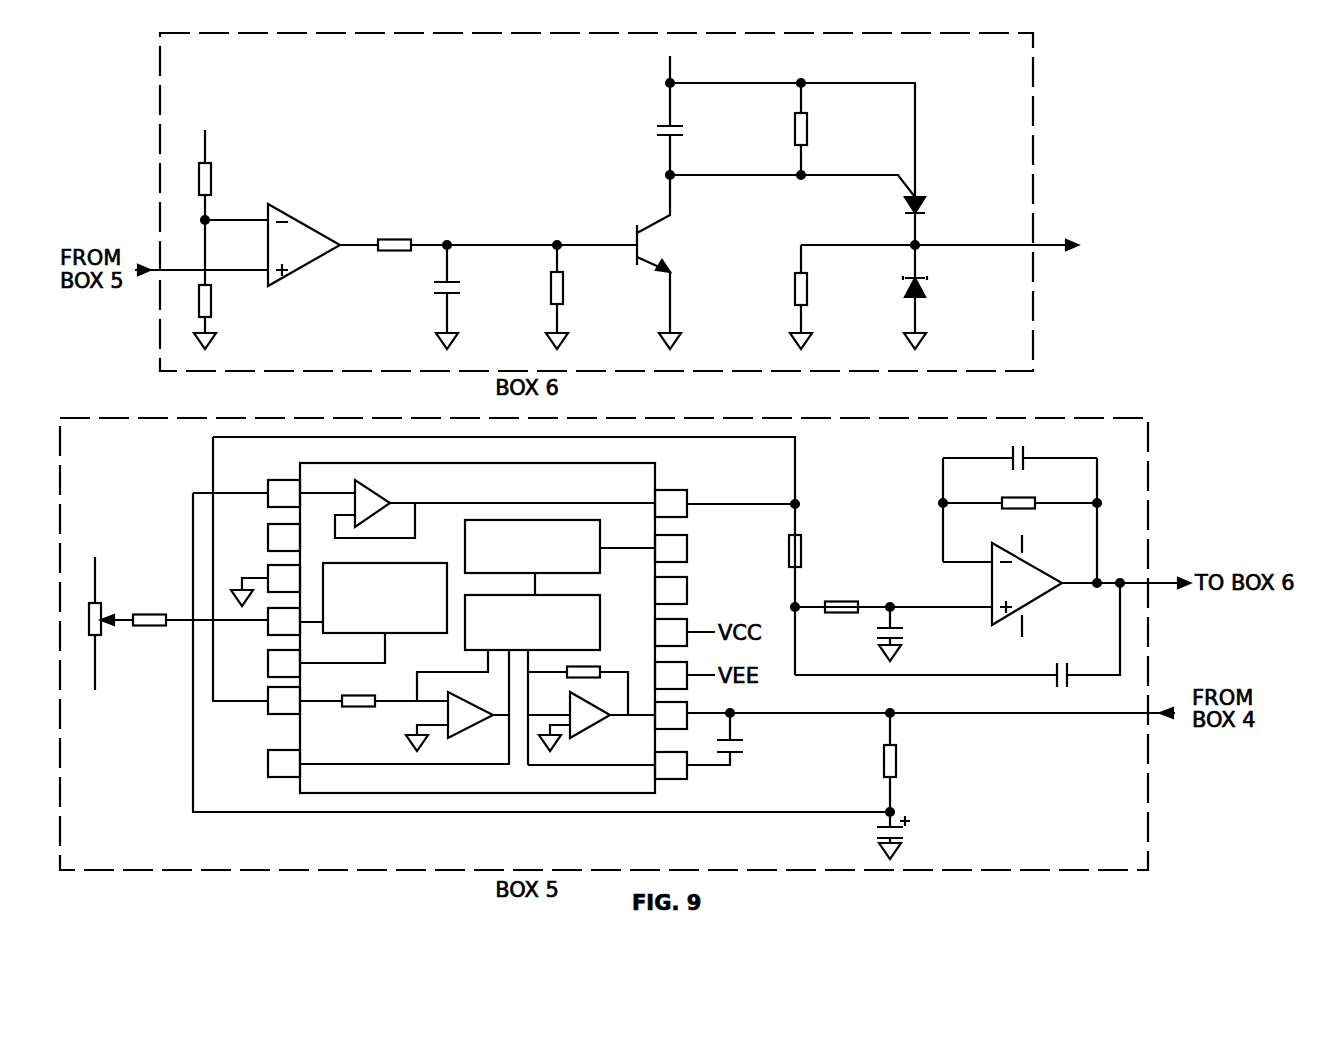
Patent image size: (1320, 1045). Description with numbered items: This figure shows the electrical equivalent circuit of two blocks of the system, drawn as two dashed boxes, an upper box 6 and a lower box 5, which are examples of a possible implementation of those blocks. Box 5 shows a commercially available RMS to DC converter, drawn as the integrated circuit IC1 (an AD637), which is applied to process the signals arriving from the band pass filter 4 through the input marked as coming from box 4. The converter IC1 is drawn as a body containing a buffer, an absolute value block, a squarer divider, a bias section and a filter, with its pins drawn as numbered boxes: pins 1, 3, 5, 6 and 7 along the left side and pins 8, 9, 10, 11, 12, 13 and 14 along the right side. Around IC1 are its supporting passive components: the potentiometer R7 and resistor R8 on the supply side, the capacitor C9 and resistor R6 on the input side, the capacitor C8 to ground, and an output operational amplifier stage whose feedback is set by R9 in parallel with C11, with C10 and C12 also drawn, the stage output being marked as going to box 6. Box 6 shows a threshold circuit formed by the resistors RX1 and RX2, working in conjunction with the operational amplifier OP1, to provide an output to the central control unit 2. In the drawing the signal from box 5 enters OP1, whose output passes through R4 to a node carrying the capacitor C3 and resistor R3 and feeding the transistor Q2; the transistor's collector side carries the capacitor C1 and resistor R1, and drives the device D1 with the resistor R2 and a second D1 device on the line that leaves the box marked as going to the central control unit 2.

The central control unit 2 is at (1174, 250).
The resistor RX1 is at (221, 195).
The resistor RX2 is at (226, 317).
The operational amplifier OP1 is at (282, 245).
The resistor R4 100K R4 is at (448, 222).
The capacitor C3 100NF C3 is at (482, 297).
The resistor R3 47K5 R3 is at (586, 297).
The transistor Q2 BC5478 Q2 is at (659, 262).
The capacitor C1 47NF C1 is at (696, 105).
The resistor R1 8.45K R1 is at (836, 129).
The resistor R2 30.1K R2 is at (833, 297).
The diode D1 is at (960, 262).
The integrated circuit AD637 IC1 is at (459, 617).
The resistor R7 is at (170, 625).
The resistor R8 is at (128, 659).
The resistor R9 6.8MEG R9 is at (1020, 520).
The resistor R6 4.7MEG R6 is at (935, 764).
The capacitor C8 6.8UF C8 is at (928, 835).
The capacitor C9 100PF C9 is at (748, 741).
The capacitor C10 470NF C10 is at (926, 637).
The capacitor C11 100NF C11 is at (1020, 444).
The capacitor C12 470NF C12 is at (957, 646).
The IC1 pin 1 is at (284, 493).
The IC1 pin 3 is at (284, 578).
The band pass filter 4 is at (284, 621).
The box 5 is at (284, 663).
The box 6 is at (284, 700).
The IC1 pin 7 is at (284, 763).
The IC1 pin 8 is at (671, 765).
The IC1 pin 9 is at (671, 715).
The IC1 pin 10 is at (671, 675).
The IC1 pin 11 is at (671, 632).
The IC1 pin 12 is at (671, 590).
The IC1 pin 13 is at (671, 548).
The IC1 pin 14 is at (671, 503).